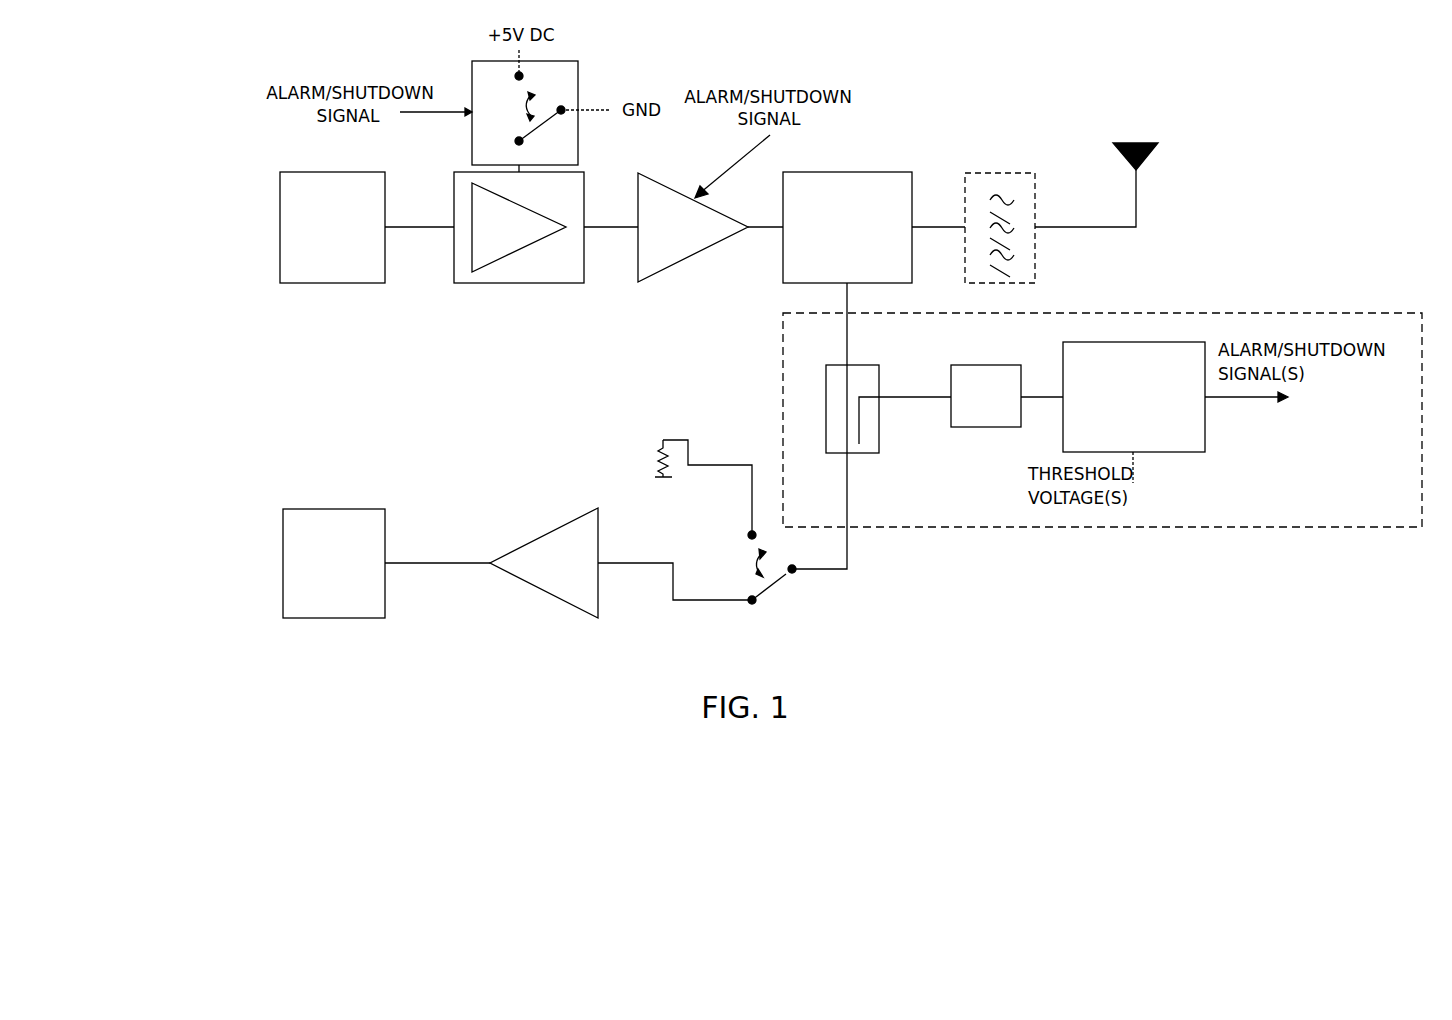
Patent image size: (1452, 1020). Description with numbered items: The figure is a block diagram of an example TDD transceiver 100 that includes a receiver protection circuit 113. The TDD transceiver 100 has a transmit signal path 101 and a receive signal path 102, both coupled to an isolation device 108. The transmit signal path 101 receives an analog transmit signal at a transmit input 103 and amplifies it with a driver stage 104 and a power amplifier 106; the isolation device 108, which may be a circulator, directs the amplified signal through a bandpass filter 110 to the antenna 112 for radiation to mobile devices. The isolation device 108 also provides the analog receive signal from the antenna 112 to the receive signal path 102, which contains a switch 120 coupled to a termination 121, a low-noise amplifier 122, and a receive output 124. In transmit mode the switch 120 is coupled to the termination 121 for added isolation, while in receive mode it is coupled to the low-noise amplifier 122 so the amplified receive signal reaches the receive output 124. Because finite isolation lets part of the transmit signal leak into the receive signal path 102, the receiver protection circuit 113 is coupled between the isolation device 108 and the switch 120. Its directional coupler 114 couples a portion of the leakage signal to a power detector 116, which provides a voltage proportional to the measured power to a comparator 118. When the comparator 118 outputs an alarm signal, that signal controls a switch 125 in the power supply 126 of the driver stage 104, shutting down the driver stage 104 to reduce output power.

The TDD transceiver 100 is at (215, 155).
The transmit signal path 101 is at (238, 240).
The receive signal path 102 is at (250, 565).
The transmit input 103 is at (332, 227).
The driver stage 104 is at (518, 283).
The power amplifier 106 is at (693, 257).
The isolation device 108 is at (847, 227).
The bandpass filter 110 is at (1000, 172).
The antenna 112 is at (1148, 160).
The receiver protection circuit 113 is at (1103, 420).
The directional coupler 114 is at (850, 363).
The power detector 116 is at (1007, 396).
The comparator 118 is at (1134, 397).
The switch 120 is at (770, 588).
The termination 121 is at (683, 436).
The low-noise amplifier 122 is at (543, 592).
The receive output 124 is at (334, 563).
The switch 125 is at (540, 125).
The power supply 126 is at (578, 65).